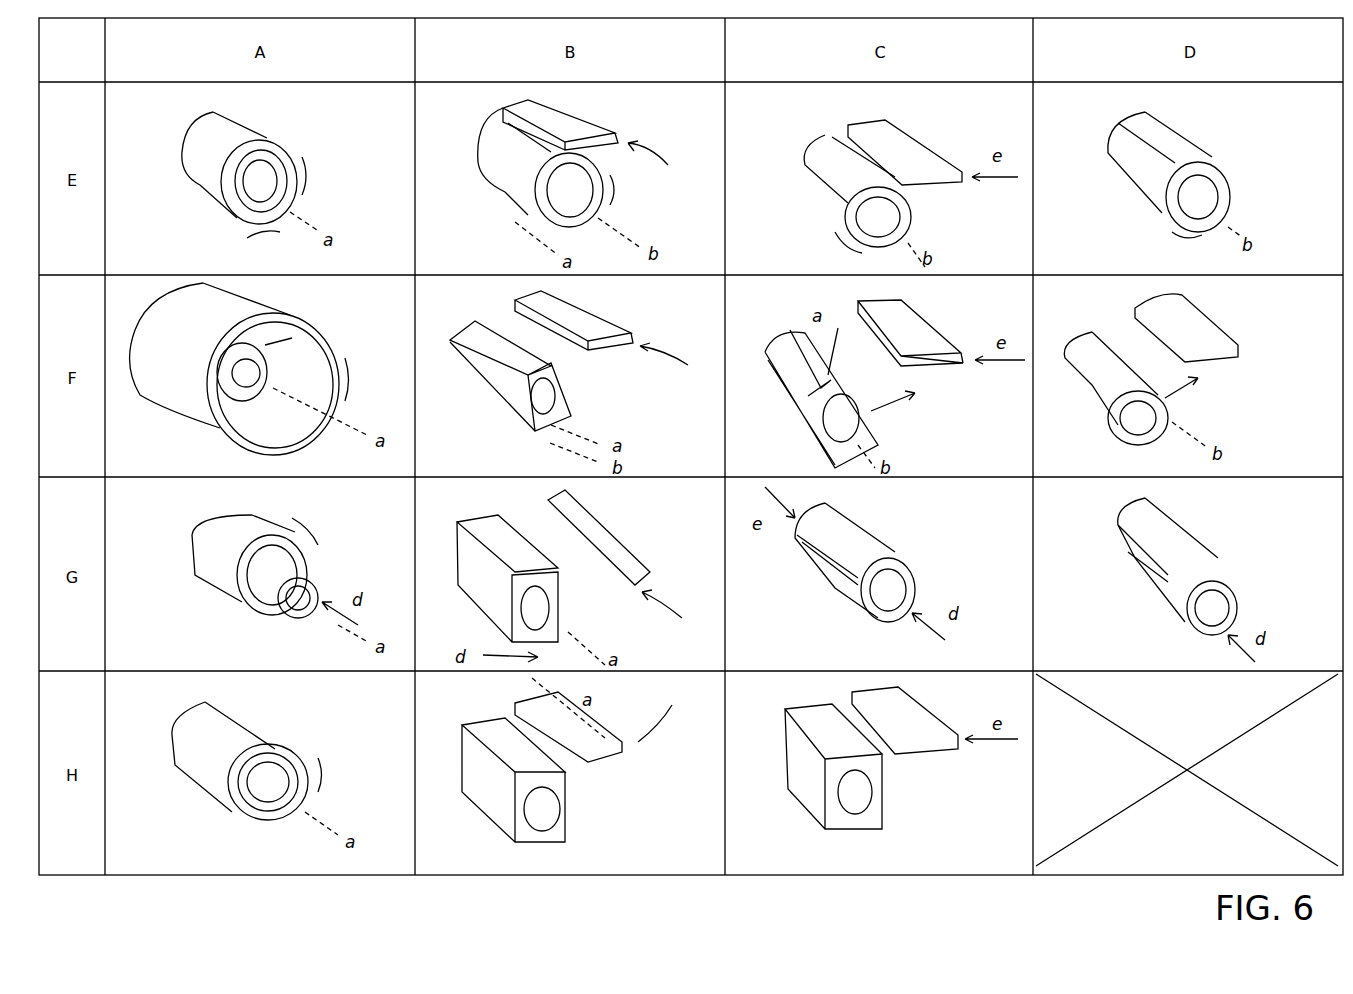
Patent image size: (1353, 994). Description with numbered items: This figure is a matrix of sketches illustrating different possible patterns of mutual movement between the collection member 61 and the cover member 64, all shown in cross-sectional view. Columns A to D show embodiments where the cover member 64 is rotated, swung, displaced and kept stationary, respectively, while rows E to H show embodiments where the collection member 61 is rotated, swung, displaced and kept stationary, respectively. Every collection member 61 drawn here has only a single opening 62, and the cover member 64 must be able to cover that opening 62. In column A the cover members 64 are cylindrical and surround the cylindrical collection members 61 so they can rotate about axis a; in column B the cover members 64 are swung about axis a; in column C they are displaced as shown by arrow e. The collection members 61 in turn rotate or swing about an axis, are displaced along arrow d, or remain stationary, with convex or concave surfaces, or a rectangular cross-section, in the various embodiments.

The collection member 61 is at (674, 483).
The opening 62 is at (702, 461).
The cover member 64 is at (703, 463).